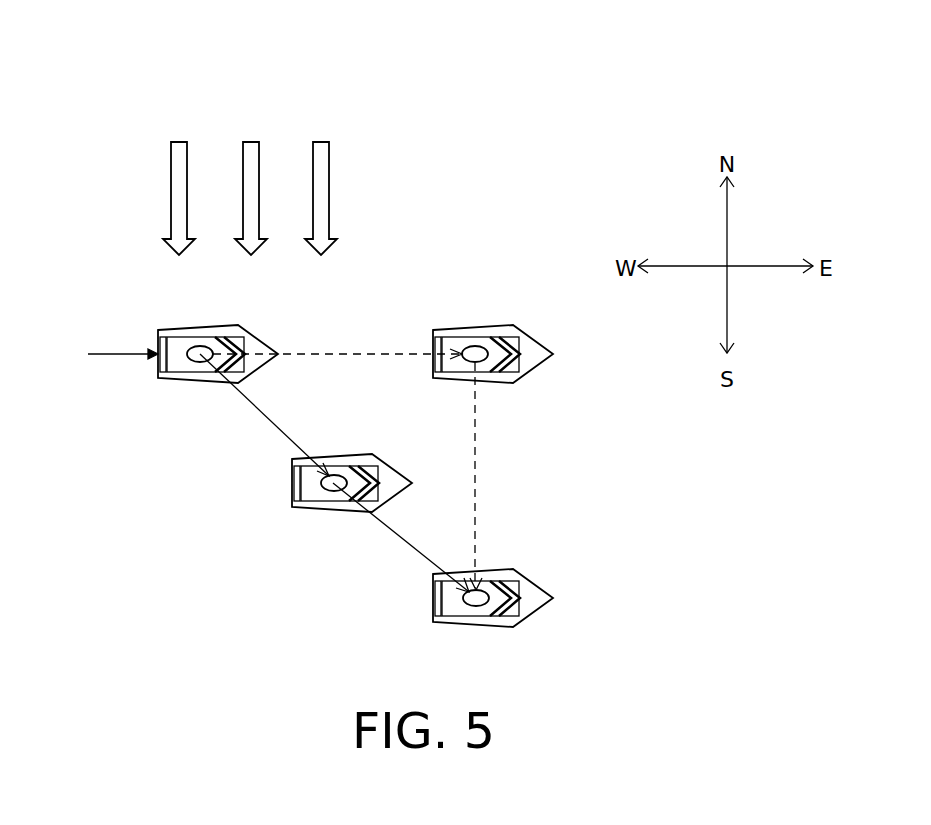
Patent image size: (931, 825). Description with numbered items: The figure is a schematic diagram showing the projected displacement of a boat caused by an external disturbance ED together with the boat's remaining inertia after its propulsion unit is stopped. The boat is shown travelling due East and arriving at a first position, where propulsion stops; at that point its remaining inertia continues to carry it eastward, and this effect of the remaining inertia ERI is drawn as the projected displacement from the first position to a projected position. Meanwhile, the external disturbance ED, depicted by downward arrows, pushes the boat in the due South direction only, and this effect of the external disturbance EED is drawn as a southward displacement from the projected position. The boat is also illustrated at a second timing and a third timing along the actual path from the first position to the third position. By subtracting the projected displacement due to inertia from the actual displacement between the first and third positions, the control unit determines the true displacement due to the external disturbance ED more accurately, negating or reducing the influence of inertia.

The external disturbance ED is at (179, 142).
The effect of the remaining inertia ERI is at (337, 342).
The effect of the external disturbance EED is at (496, 476).